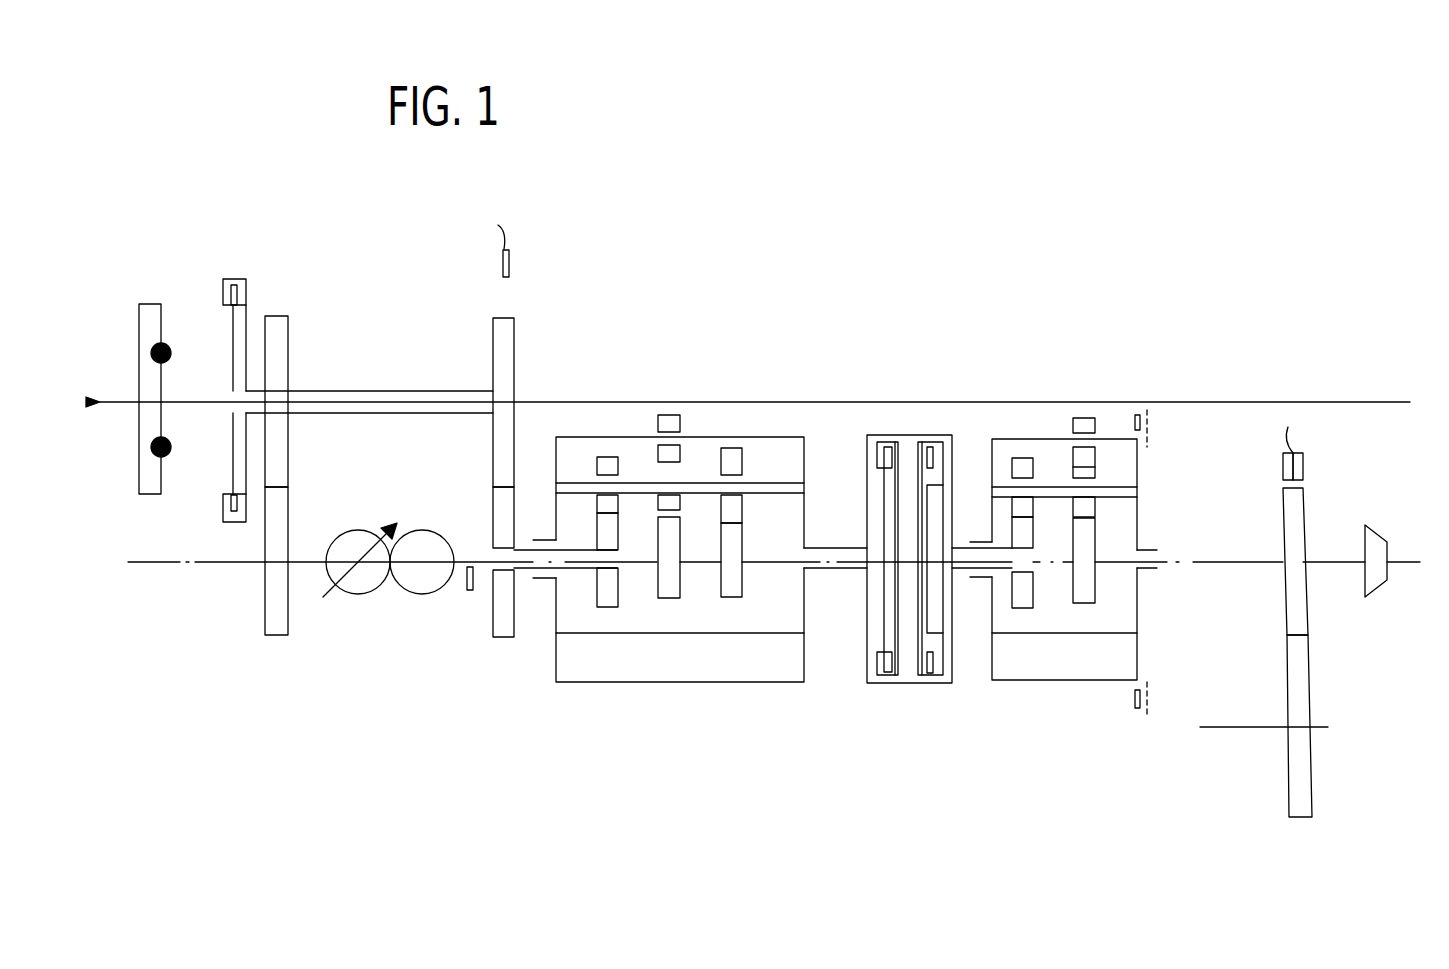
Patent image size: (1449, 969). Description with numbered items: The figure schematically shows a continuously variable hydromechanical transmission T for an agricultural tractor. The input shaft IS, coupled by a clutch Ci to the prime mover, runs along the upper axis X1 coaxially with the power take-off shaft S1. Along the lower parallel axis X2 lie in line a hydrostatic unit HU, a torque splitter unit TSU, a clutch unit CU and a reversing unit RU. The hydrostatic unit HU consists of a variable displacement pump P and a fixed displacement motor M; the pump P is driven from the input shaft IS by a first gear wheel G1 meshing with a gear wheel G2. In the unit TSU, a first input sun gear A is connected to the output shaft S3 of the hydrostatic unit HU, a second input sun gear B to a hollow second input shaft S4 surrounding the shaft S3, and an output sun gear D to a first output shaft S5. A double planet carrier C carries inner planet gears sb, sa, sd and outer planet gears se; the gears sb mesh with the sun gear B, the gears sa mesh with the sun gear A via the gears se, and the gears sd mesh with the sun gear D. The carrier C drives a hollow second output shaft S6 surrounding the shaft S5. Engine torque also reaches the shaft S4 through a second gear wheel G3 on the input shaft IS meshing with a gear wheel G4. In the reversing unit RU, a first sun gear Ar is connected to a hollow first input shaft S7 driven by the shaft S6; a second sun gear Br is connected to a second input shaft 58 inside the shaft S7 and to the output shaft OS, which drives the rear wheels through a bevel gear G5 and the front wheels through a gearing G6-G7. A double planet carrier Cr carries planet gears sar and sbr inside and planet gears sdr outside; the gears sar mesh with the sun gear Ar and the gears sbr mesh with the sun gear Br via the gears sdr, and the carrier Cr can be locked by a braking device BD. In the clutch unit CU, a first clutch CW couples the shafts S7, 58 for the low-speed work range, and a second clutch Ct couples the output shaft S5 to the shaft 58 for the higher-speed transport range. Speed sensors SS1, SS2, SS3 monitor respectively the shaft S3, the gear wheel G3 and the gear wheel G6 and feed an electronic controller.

The axis X1 is at (1345, 402).
The axis X2 is at (205, 563).
The clutch Ci is at (223, 280).
The input shaft IS is at (366, 391).
The first gear wheel G1 is at (276, 316).
The gear wheel G2 is at (277, 636).
The second gear wheel G3 is at (517, 337).
The gear wheel G4 is at (500, 640).
The bevel gear G5 is at (1385, 583).
The gear wheel G6 is at (1298, 505).
The gear wheel G7 is at (1305, 677).
The first sensor SS1 is at (300, 564).
The second sensor SS2 is at (513, 260).
The third sensor SS3 is at (1303, 462).
The hydrostatic unit HU is at (388, 618).
The variable displacement pump P is at (347, 529).
The fixed displacement motor M is at (417, 529).
The power take-off shaft S1 is at (470, 593).
The output shaft of the hydrostatic unit S3 is at (635, 565).
The second input shaft S4 is at (572, 570).
The first output shaft S5 is at (762, 565).
The second output shaft S6 is at (830, 569).
The first input shaft S7 is at (962, 572).
The torque splitter unit TSU is at (711, 565).
The double planet carrier C is at (805, 456).
The first input sun gear A is at (670, 598).
The second input sun gear B is at (603, 607).
The output sun gear D is at (733, 597).
The planet gear sa is at (672, 533).
The planet gear sb is at (603, 457).
The planet gear sd is at (743, 459).
The planet gear se is at (659, 415).
The clutch unit CU is at (905, 499).
The second clutch Ct is at (882, 437).
The first clutch CW is at (938, 676).
The second input shaft 58 is at (963, 546).
The reversing unit RU is at (1091, 575).
The double planet carrier Cr is at (1137, 467).
The first sun gear Ar is at (1022, 608).
The second sun gear Br is at (1085, 603).
The planet gear sar is at (1025, 458).
The planet gear sbr is at (1095, 453).
The planet gear sdr is at (1087, 418).
The braking device BD is at (1150, 425).
The output shaft OS is at (1205, 564).
The continuously variable hydromechanical transmission T is at (1044, 275).